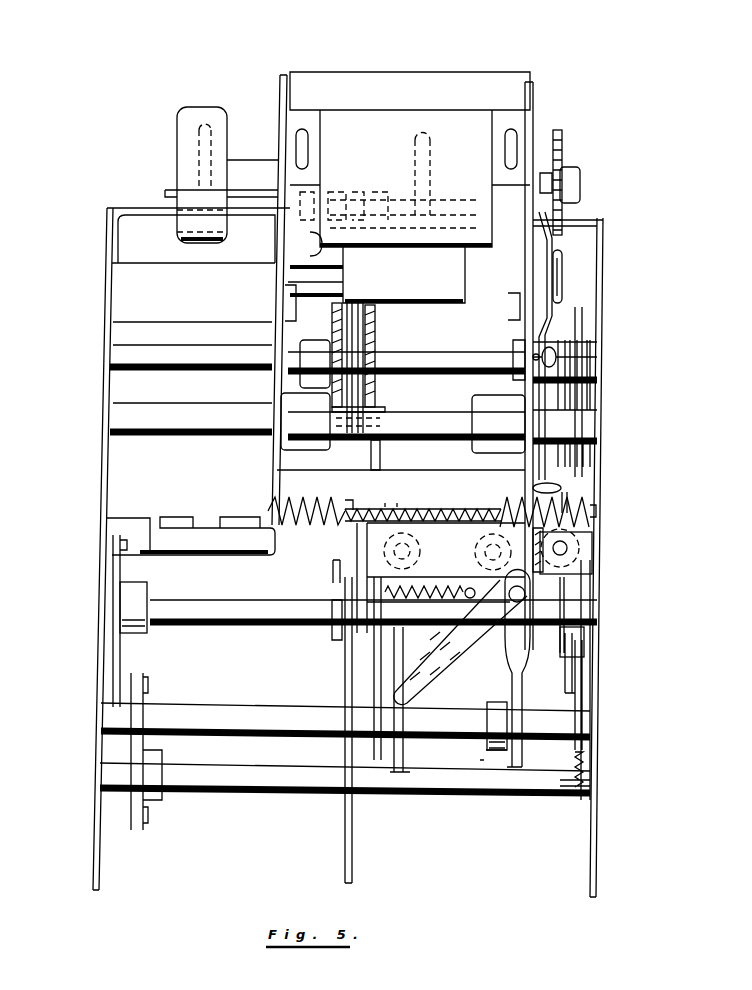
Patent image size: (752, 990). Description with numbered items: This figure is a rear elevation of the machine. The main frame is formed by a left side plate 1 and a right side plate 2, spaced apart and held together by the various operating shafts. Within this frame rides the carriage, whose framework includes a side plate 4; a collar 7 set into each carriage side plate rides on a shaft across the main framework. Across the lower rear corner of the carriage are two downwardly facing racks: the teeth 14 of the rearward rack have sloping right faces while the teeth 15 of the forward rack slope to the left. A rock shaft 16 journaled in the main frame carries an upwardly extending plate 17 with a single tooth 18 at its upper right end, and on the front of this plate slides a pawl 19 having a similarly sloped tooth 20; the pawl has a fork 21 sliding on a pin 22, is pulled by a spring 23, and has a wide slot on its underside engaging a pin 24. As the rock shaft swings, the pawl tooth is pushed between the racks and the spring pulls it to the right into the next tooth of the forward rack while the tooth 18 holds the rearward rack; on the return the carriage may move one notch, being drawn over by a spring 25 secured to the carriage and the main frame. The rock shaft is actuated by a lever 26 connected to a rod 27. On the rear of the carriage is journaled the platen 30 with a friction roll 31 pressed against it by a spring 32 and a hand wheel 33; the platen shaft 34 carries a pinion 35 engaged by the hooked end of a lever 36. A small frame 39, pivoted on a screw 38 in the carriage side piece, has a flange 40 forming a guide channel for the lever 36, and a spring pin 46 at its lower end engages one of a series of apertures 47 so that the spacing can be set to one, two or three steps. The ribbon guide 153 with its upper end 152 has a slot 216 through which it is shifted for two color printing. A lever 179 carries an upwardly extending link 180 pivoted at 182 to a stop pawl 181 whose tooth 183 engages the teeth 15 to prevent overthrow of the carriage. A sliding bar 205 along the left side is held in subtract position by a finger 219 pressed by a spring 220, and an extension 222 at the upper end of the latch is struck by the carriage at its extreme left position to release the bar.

The left side plate 1 is at (601, 455).
The right side plate 2 is at (107, 483).
The carriage side plate 4 is at (531, 113).
The collar 7 is at (300, 407).
The teeth of the rearward rack 14 is at (386, 506).
The teeth of the forward rack 15 is at (398, 510).
The rock shaft 16 is at (215, 610).
The plate 17 is at (440, 548).
The tooth 18 is at (378, 512).
The sliding pawl 19 is at (415, 545).
The tooth 20 is at (348, 508).
The fork 21 is at (583, 548).
The pin 22 is at (505, 553).
The spring 23 is at (353, 628).
The pin 24 is at (350, 575).
The spring 25 is at (285, 500).
The lever 26 is at (120, 587).
The rod 27 is at (113, 572).
The platen 30 is at (438, 130).
The friction roll 31 is at (450, 268).
The spring 32 is at (402, 303).
The hand wheel 33 is at (196, 130).
The platen shaft 34 is at (557, 163).
The pinion 35 is at (548, 178).
The lever 36 is at (563, 295).
The screw 38 is at (580, 177).
The small frame 39 is at (548, 232).
The flange 40 is at (562, 286).
The spring pin 46 is at (557, 360).
The apertures 47 is at (525, 355).
The upper end of the ribbon guide 152 is at (333, 193).
The ribbon guide 153 is at (376, 348).
The lever 179 is at (508, 755).
The link 180 is at (523, 738).
The stop pawl 181 is at (447, 662).
The pivot 182 is at (519, 600).
The tooth 183 is at (416, 670).
The sliding bar 205 is at (590, 660).
The slot 216 is at (565, 685).
The finger 219 is at (580, 640).
The spring 220 is at (572, 498).
The extension 222 is at (572, 503).